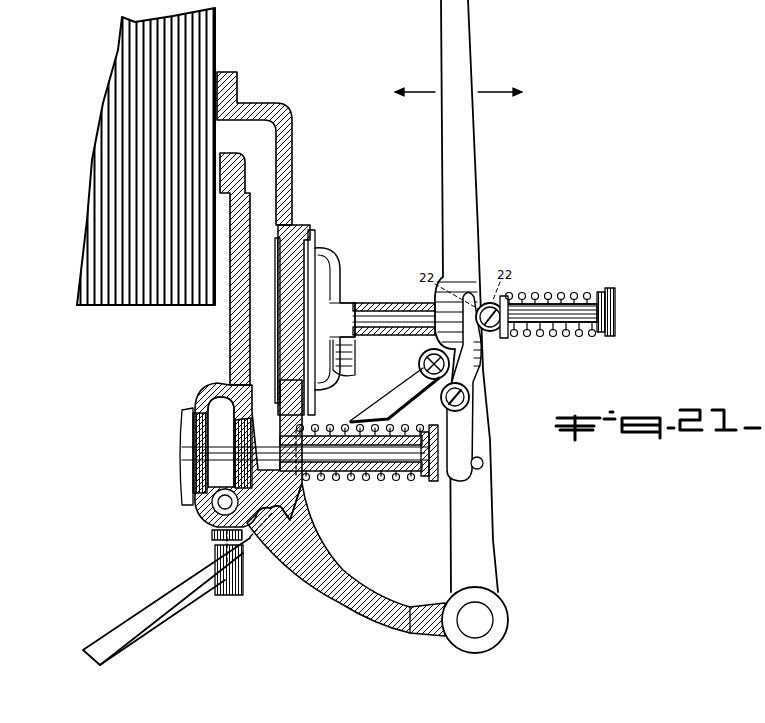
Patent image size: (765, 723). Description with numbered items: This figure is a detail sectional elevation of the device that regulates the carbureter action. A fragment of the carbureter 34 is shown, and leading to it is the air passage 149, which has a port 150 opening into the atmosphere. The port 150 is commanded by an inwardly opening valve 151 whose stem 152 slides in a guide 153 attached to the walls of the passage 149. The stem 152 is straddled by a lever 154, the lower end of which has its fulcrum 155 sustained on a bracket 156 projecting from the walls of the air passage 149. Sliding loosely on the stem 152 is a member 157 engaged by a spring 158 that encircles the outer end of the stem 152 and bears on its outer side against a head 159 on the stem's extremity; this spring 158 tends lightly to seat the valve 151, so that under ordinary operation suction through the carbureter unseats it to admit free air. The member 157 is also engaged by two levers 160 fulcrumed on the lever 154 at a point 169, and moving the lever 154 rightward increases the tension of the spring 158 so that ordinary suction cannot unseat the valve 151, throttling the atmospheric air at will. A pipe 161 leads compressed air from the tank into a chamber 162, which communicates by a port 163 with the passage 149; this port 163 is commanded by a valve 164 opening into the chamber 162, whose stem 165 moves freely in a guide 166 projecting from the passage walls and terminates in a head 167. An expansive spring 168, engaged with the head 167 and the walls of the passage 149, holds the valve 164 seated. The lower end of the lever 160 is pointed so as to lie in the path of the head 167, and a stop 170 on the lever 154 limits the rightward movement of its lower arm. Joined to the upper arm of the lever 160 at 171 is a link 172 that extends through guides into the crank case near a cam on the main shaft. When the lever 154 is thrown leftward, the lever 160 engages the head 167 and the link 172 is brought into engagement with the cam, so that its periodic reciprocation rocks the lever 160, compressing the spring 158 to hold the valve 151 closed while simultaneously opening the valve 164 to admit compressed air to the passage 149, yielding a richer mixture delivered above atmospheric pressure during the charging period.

The carbureter 34 is at (133, 287).
The air passage 149 is at (292, 172).
The port 150 is at (300, 250).
The valve 151 is at (302, 287).
The stem 152 is at (380, 313).
The guide 153 is at (347, 328).
The lever 154 is at (467, 232).
The fulcrum 155 is at (480, 620).
The bracket 156 is at (425, 622).
The member 157 is at (492, 297).
The spring 158 is at (553, 293).
The head 159 is at (615, 300).
The levers 160 is at (465, 375).
The pipe 161 is at (244, 576).
The chamber 162 is at (222, 463).
The port 163 is at (262, 422).
The valve 164 is at (235, 440).
The stem 165 is at (390, 472).
The guide 166 is at (352, 472).
The head 167 is at (435, 472).
The expansive spring 168 is at (327, 468).
The fulcrum point 169 is at (470, 398).
The stop 170 is at (484, 463).
The joint 171 is at (420, 357).
The link 172 is at (120, 645).